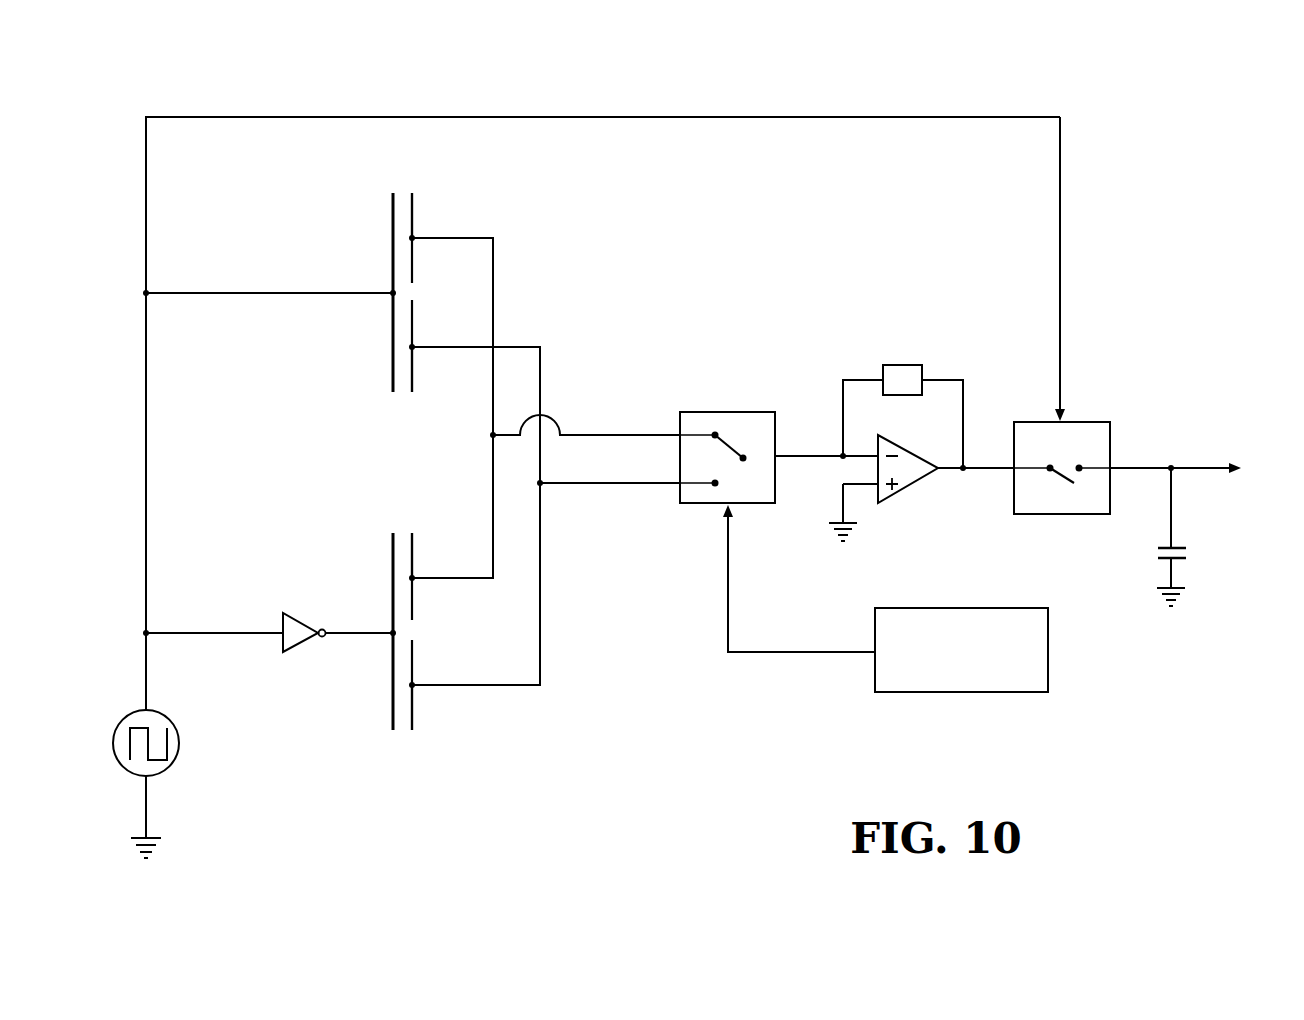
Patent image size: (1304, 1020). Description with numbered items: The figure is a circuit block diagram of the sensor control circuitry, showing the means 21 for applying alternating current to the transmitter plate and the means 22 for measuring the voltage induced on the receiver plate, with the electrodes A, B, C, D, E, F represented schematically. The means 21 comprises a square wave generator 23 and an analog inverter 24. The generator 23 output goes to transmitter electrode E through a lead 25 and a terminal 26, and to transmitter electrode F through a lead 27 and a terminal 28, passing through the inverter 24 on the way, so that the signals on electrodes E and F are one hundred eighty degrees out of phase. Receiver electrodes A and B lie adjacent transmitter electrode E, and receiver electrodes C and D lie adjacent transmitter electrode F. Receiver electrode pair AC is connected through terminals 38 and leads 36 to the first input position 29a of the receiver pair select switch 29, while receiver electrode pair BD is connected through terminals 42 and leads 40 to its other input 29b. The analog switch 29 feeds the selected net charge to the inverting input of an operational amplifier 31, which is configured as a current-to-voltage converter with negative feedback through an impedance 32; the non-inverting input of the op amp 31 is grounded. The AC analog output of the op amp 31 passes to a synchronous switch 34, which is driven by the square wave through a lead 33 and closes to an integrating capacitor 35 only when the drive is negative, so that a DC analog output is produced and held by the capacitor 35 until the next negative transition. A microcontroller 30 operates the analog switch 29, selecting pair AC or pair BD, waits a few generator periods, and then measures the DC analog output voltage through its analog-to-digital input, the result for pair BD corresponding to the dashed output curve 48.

The means for applying alternating current 21 is at (96, 155).
The means for measuring voltage 22 is at (655, 749).
The square wave generator 23 is at (125, 770).
The analog inverter 24 is at (323, 640).
The lead 25 is at (238, 293).
The terminal 26 is at (393, 290).
The lead 27 is at (233, 633).
The terminal 28 is at (393, 630).
The receiver pair select switch 29 is at (715, 448).
The first input position 29a is at (712, 426).
The second input 29b is at (714, 486).
The microcontroller 30 is at (1048, 640).
The operational amplifier 31 is at (905, 492).
The impedance 32 is at (910, 365).
The lead 33 is at (1060, 214).
The synchronous switch 34 is at (1101, 410).
The integrating capacitor 35 is at (1188, 553).
The leads 36 is at (493, 312).
The terminals 38 is at (413, 240).
The leads 40 is at (538, 687).
The terminals 42 is at (413, 347).
The output curve for receiver pair BD 48 is at (1190, 470).
The receiver electrode A is at (418, 209).
The receiver electrode B is at (418, 375).
The receiver electrode C is at (418, 550).
The receiver electrode D is at (418, 713).
The transmitter electrode E is at (388, 231).
The transmitter electrode F is at (388, 571).